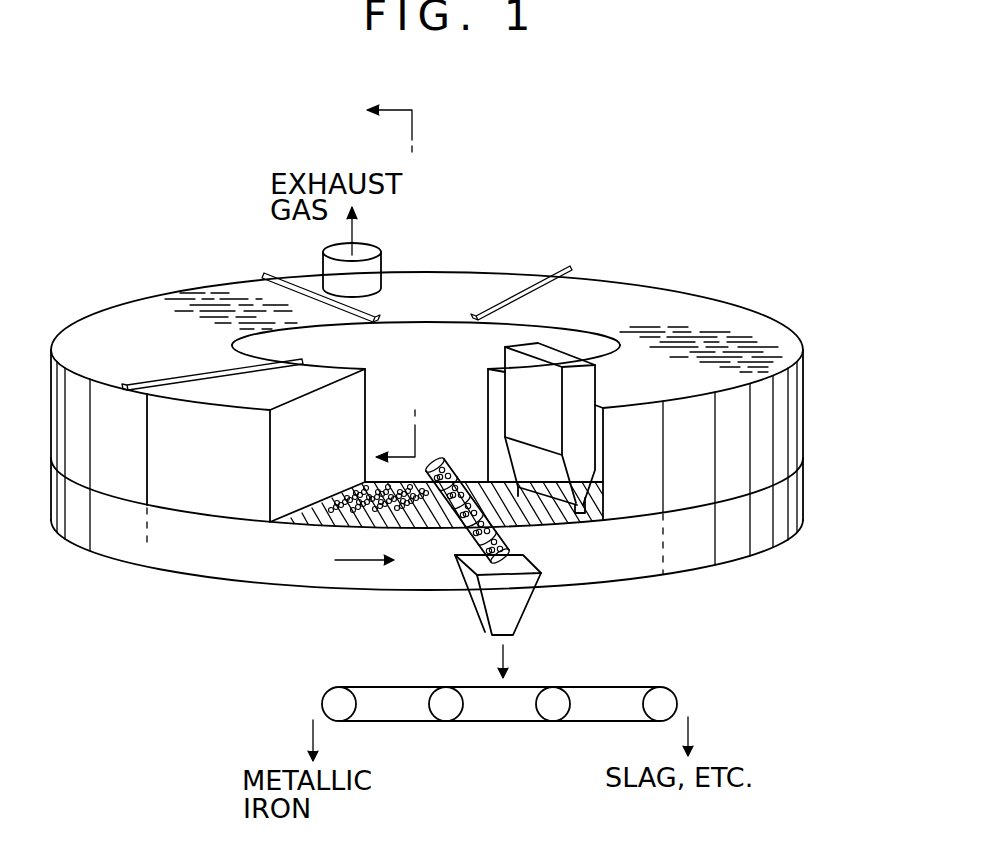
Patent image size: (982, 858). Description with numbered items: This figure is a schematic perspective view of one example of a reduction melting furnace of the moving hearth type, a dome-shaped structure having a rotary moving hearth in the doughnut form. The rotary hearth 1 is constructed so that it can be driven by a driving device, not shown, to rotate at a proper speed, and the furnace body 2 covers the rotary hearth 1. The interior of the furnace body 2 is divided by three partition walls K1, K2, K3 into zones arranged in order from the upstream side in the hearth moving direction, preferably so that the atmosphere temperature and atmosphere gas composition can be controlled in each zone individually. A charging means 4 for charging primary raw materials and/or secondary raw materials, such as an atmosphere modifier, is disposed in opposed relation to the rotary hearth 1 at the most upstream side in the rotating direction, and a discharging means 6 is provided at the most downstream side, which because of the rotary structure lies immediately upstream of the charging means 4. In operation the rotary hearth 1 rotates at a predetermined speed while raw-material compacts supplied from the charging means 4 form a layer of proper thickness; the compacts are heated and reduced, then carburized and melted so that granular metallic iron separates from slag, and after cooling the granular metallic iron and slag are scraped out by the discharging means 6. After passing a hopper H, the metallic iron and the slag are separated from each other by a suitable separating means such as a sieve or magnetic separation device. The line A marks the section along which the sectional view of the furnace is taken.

The rotary hearth 1 is at (688, 572).
The furnace body 2 is at (816, 386).
The charging means 4 is at (567, 343).
The discharging means 6 is at (430, 538).
The hopper H is at (514, 617).
The partition wall K1 is at (527, 290).
The partition wall K2 is at (278, 282).
The partition wall K3 is at (148, 386).
The line A- A is at (391, 269).